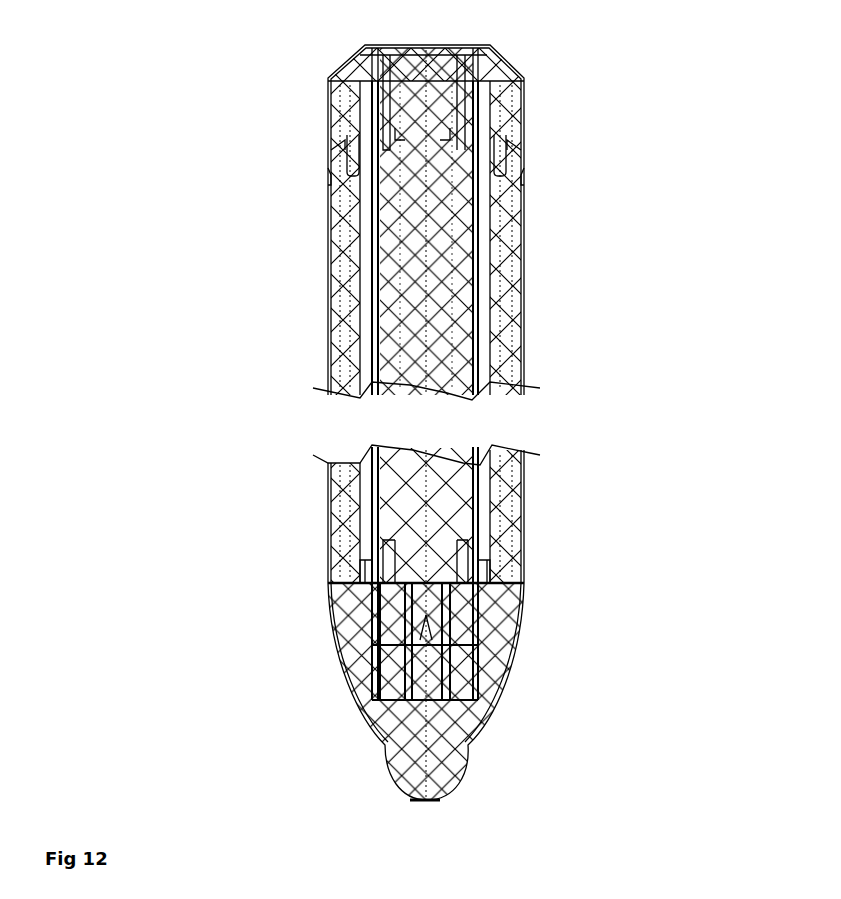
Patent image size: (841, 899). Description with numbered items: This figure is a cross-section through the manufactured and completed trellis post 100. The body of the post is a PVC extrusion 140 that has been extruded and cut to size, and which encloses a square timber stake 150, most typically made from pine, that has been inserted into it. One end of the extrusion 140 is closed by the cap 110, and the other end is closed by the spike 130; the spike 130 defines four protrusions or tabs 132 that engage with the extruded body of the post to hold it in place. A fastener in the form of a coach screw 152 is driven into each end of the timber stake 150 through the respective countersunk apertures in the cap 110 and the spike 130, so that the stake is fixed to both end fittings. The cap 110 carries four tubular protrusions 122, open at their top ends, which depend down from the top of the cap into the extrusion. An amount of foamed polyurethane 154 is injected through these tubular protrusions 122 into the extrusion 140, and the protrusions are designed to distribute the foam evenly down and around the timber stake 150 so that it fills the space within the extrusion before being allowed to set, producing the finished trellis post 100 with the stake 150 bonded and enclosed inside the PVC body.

The trellis post 100 is at (538, 102).
The cap 110 is at (505, 66).
The tubular tabs/protrusions 122 is at (340, 148).
The spike 130 is at (515, 652).
The protrusions or tabs 132 is at (490, 555).
The PVC extrusion 140 is at (525, 318).
The timber stake 150 is at (443, 347).
The coach screw 152 is at (437, 194).
The foamed polyurethane 154 is at (365, 268).